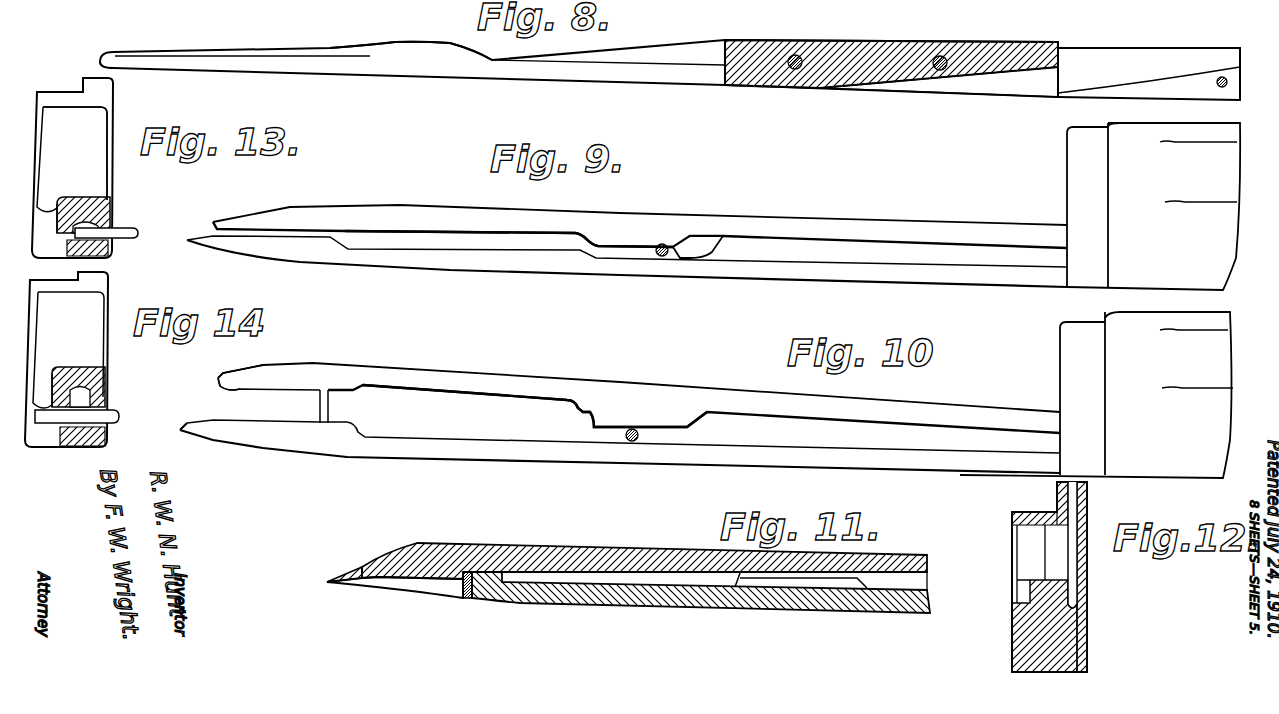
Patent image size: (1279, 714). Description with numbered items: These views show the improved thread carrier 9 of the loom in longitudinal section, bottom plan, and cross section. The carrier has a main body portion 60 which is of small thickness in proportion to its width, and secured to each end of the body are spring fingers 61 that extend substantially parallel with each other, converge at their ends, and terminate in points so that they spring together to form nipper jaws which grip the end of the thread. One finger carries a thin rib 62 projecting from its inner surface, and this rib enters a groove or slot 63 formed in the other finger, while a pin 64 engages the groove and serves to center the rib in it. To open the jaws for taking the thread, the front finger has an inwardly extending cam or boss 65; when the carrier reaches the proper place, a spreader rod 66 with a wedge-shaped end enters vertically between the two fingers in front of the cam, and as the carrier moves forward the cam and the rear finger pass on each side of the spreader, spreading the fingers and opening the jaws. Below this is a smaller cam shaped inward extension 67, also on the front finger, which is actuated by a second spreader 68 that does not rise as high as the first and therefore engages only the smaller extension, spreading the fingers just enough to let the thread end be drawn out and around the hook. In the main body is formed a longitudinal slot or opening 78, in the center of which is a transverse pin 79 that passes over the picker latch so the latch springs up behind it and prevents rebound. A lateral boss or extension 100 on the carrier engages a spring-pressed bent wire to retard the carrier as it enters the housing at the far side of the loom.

In FIG. 8, the thread carrier 9 is at (782, 82).
In FIG. 9, the thread carrier 9 is at (700, 270).
In FIG. 10, the thread carrier 9 is at (1072, 392).
In FIG. 11, the thread carrier 9 is at (908, 585).
In FIG. 12, the thread carrier 9 is at (1017, 530).
In FIG. 13, the thread carrier 9 is at (95, 175).
In FIG. 14, the thread carrier 9 is at (95, 350).
In FIG. 8, the main body portion 60 is at (913, 65).
In FIG. 9, the main body portion 60 is at (1135, 157).
In FIG. 10, the main body portion 60 is at (1113, 343).
In FIG. 12, the main body portion 60 is at (1028, 637).
In FIG. 13, the main body portion 60 is at (110, 113).
In FIG. 9, the spring fingers 61 is at (407, 207).
In FIG. 10, the spring fingers 61 is at (533, 392).
In FIG. 11, the spring fingers 61 is at (583, 547).
In FIG. 10, the rib 62 is at (277, 388).
In FIG. 11, the rib 62 is at (417, 578).
In FIG. 11, the groove or slot 63 is at (443, 592).
In FIG. 10, the pin 64 is at (327, 408).
In FIG. 11, the pin 64 is at (468, 598).
In FIG. 8, the cam or boss 65 is at (410, 43).
In FIG. 9, the cam or boss 65 is at (697, 248).
In FIG. 11, the cam or boss 65 is at (820, 580).
In FIG. 13, the cam or boss 65 is at (63, 203).
In FIG. 14, the cam or boss 65 is at (53, 387).
In FIG. 10, the spreader rod 66 is at (635, 440).
In FIG. 14, the spreader rod 66 is at (110, 420).
In FIG. 9, the cam shaped inward extension 67 is at (625, 235).
In FIG. 10, the cam shaped inward extension 67 is at (645, 403).
In FIG. 13, the cam shaped inward extension 67 is at (112, 218).
In FIG. 14, the cam shaped inward extension 67 is at (107, 392).
In FIG. 9, the second spreader 68 is at (660, 255).
In FIG. 13, the second spreader 68 is at (130, 238).
In FIG. 8, the longitudinal slot or opening 78 is at (1050, 88).
In FIG. 8, the transverse pin 79 is at (1217, 82).
In FIG. 12, the transverse pin 79 is at (1072, 563).
In FIG. 8, the lateral boss or extension 100 is at (670, 50).